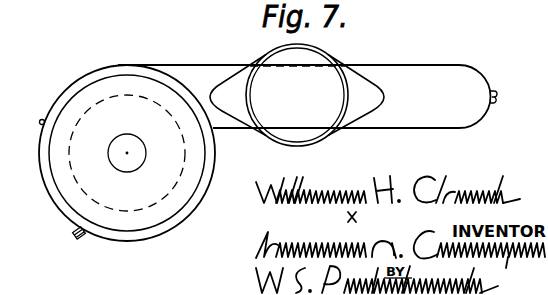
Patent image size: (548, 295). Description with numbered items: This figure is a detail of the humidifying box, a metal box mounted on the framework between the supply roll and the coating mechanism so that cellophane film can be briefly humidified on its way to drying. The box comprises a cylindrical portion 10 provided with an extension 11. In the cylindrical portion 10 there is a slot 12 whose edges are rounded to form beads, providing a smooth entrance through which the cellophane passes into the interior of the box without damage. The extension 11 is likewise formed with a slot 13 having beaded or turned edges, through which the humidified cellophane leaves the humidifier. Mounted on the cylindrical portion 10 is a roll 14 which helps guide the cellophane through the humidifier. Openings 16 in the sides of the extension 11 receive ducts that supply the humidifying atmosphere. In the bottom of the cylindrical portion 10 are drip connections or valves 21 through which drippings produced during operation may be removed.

The cylindrical portion 10 is at (204, 196).
The extension 11 is at (304, 86).
The slot 12 is at (40, 125).
The slot 13 is at (498, 97).
The roll 14 is at (121, 93).
The openings 16 is at (322, 58).
The drip connections or valves 21 is at (80, 238).